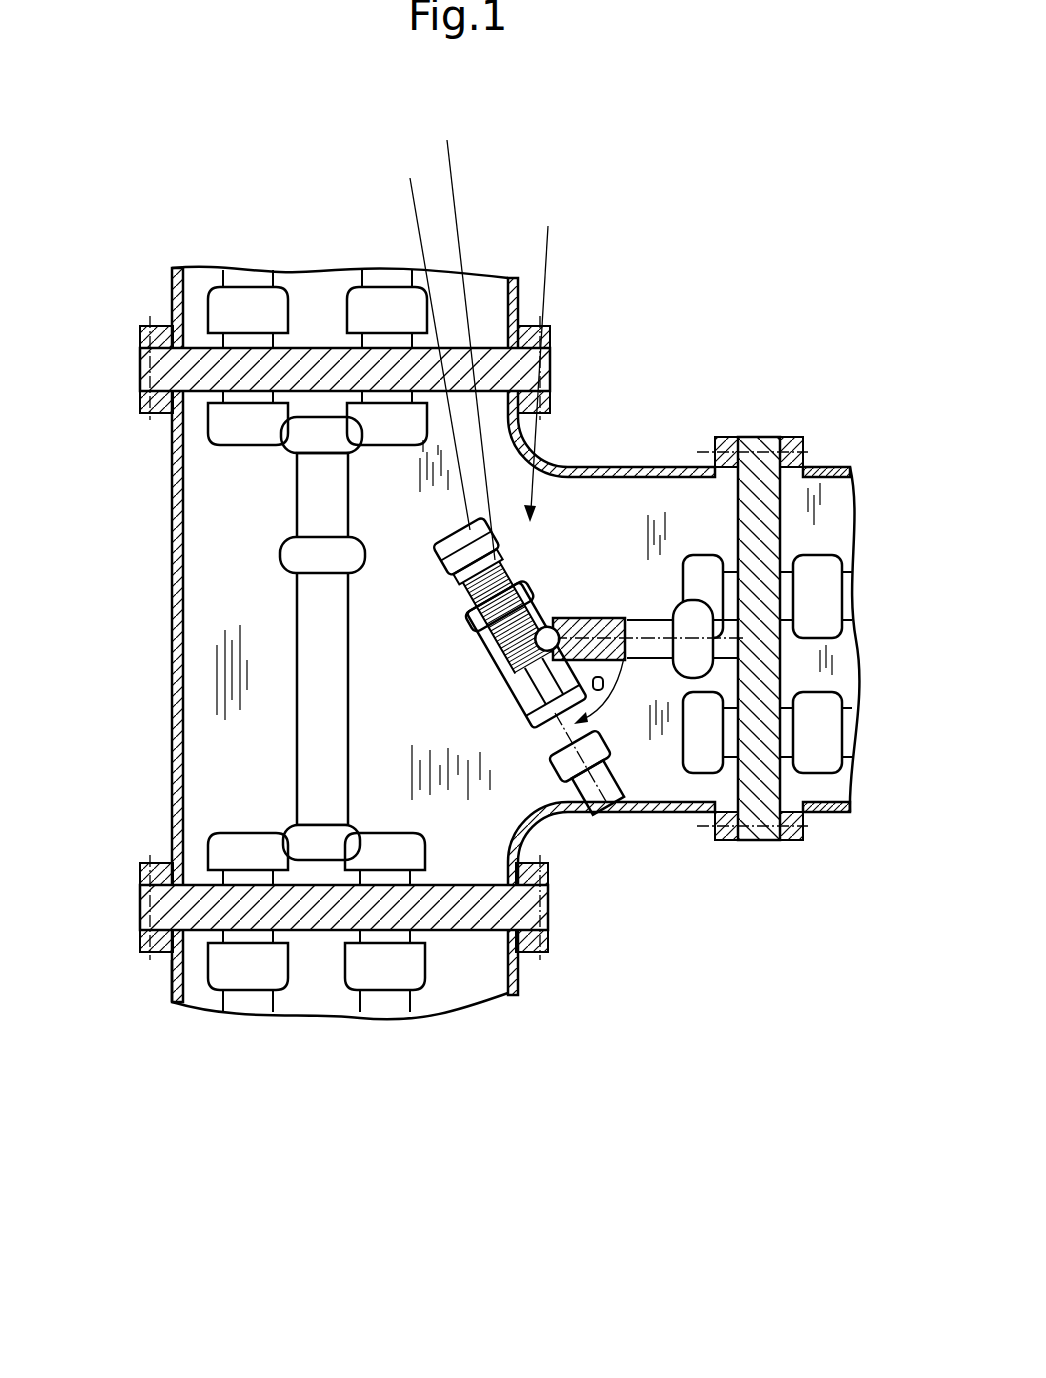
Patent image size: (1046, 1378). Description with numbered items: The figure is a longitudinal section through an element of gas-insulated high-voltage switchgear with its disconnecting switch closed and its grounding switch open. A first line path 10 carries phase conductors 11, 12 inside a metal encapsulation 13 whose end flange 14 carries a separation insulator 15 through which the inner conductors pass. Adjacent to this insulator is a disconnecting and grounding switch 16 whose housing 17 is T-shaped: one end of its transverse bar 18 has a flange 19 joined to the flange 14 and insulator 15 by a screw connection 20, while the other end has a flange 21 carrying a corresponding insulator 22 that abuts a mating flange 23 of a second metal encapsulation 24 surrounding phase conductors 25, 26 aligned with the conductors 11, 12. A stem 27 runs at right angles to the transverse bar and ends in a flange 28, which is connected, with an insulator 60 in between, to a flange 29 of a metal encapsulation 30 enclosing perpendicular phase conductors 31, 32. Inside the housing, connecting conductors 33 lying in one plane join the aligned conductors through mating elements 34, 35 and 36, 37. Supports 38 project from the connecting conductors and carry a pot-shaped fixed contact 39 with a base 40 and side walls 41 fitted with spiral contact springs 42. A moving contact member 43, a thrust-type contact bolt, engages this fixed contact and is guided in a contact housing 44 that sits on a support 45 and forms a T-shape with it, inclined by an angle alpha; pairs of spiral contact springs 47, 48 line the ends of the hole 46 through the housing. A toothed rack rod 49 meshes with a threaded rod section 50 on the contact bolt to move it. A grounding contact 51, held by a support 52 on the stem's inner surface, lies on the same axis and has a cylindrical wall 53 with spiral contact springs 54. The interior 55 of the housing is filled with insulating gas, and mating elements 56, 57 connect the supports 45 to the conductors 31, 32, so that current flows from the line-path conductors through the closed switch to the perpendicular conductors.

The first line path 10 is at (362, 272).
The phase conductor 11 is at (217, 318).
The phase conductor 12 is at (355, 307).
The metal encapsulation 13 is at (176, 276).
The end flange 14 is at (143, 330).
The separation insulator 15 is at (140, 355).
The disconnecting and grounding switch 16 is at (388, 493).
The housing 17 is at (547, 638).
The transverse bar 18 is at (463, 330).
The flange 19 is at (140, 403).
The screw connection 20 is at (155, 320).
The flange 21 is at (150, 865).
The insulator 22 is at (140, 897).
The mating flange 23 is at (140, 945).
The metal encapsulation 24 is at (172, 1002).
The phase conductor 25 is at (233, 978).
The phase conductor 26 is at (367, 978).
The stem 27 is at (676, 505).
The flange 28 is at (712, 565).
The flange 29 is at (800, 437).
The metal encapsulation 30 is at (853, 477).
The phase conductor 31 is at (812, 573).
The phase conductor 32 is at (830, 753).
The connecting conductor 33 is at (330, 478).
The mating element 34 is at (272, 413).
The mating element 35 is at (360, 408).
The mating element 36 is at (253, 853).
The mating element 37 is at (413, 858).
The support 38 is at (300, 562).
The fixed contact 39 is at (477, 566).
The base 40 is at (466, 546).
The side wall 41 is at (430, 333).
The spiral contact spring 42 is at (507, 617).
The moving contact member 43 is at (500, 606).
The contact housing 44 is at (526, 655).
The support 45 is at (587, 632).
The hole 46 is at (533, 677).
The spiral contact spring 47 is at (544, 681).
The spiral contact spring 48 is at (535, 714).
The toothed rack rod 49 is at (556, 615).
The threaded rod section 50 is at (480, 463).
The grounding contact 51 is at (565, 795).
The support 52 is at (593, 795).
The cylindrical wall 53 is at (627, 636).
The spiral contact spring 54 is at (577, 770).
The interior 55 is at (425, 476).
The mating element 56 is at (742, 470).
The mating element 57 is at (703, 760).
The insulator 60 is at (758, 460).